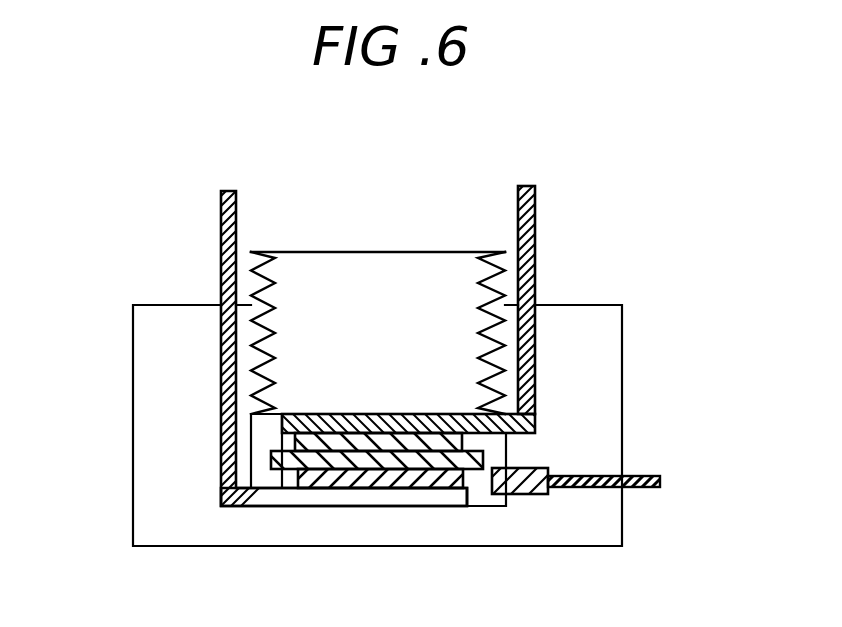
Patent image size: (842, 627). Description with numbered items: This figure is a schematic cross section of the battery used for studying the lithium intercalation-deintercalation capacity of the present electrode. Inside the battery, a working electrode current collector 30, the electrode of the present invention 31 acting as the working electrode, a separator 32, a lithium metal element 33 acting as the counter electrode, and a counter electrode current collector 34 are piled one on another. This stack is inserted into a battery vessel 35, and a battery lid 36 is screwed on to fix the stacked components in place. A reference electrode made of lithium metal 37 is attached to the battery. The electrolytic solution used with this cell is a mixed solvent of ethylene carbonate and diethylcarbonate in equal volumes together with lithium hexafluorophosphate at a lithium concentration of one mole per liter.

The working electrode current collector 30 is at (221, 207).
The electrode of the present invention 31 is at (292, 508).
The separator 32 is at (350, 508).
The lithium metal element 33 is at (420, 440).
The counter electrode current collector 34 is at (536, 242).
The battery vessel 35 is at (165, 393).
The battery lid 36 is at (328, 285).
The reference electrode made of lithium metal 37 is at (645, 476).